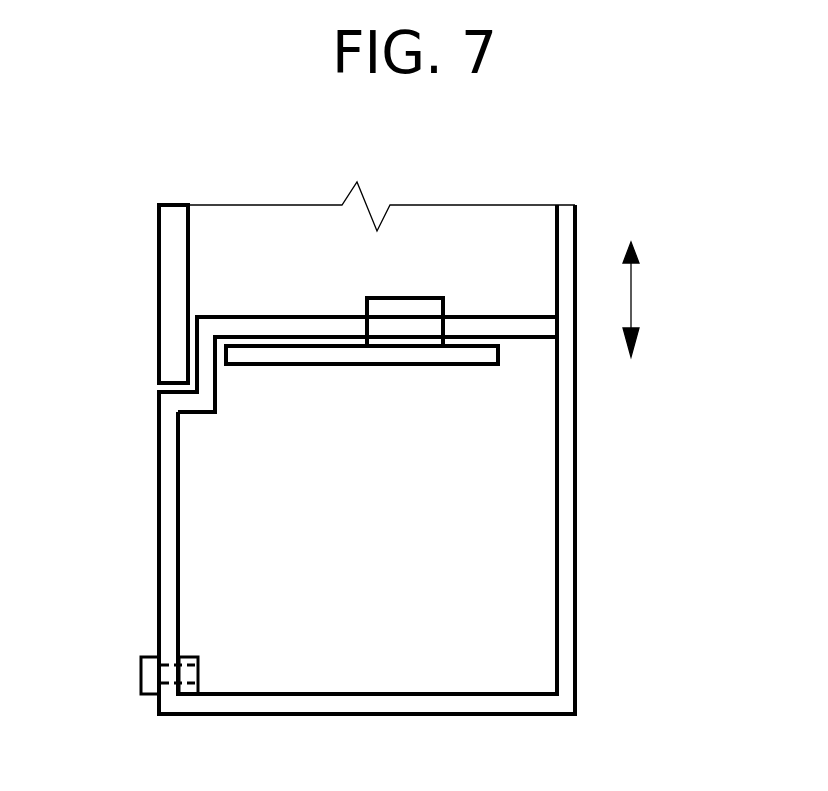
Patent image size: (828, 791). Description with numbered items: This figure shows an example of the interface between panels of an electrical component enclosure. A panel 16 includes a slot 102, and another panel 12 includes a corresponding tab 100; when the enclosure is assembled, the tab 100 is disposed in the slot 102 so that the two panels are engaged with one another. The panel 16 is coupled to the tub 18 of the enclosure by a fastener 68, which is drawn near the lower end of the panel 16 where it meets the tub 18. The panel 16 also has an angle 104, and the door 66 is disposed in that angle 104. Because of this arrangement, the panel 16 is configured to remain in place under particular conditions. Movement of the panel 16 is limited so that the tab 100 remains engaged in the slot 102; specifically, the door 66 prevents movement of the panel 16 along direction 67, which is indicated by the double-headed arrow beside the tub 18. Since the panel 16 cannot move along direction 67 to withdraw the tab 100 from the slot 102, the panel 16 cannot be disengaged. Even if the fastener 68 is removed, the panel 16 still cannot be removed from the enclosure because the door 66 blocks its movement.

The panel 12 is at (317, 364).
The panel 16 is at (159, 507).
The tub 18 is at (575, 503).
The door 66 is at (159, 307).
The direction 67 is at (631, 298).
The fastener 68 is at (141, 673).
The tab 100 is at (367, 298).
The slot 102 is at (405, 338).
The angle 104 is at (217, 414).